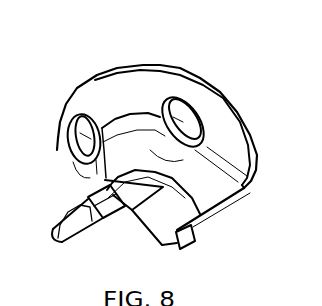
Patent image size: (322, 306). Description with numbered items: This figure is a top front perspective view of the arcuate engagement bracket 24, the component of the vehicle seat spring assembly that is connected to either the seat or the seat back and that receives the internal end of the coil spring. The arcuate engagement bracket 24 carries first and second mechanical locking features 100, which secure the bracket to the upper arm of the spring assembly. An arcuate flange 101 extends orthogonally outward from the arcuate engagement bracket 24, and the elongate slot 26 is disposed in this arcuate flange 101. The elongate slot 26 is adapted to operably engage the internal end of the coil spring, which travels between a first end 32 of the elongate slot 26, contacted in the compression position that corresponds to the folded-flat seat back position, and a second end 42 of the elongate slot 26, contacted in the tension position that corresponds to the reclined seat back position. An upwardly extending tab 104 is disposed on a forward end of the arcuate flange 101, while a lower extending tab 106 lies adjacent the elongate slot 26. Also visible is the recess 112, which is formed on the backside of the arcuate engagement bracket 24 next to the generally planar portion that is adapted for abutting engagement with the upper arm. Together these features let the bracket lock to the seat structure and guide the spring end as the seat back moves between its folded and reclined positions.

The arcuate engagement bracket 24 is at (96, 91).
The first end of the elongate slot 32 is at (119, 106).
The mechanical locking features 100 is at (44, 143).
The lower extending tab 106 is at (92, 234).
The elongate slot 26 is at (115, 229).
The second end of the elongate slot 42 is at (128, 225).
The recess 112 is at (244, 192).
The arcuate flange 101 is at (196, 232).
The upwardly extending tab 104 is at (177, 256).